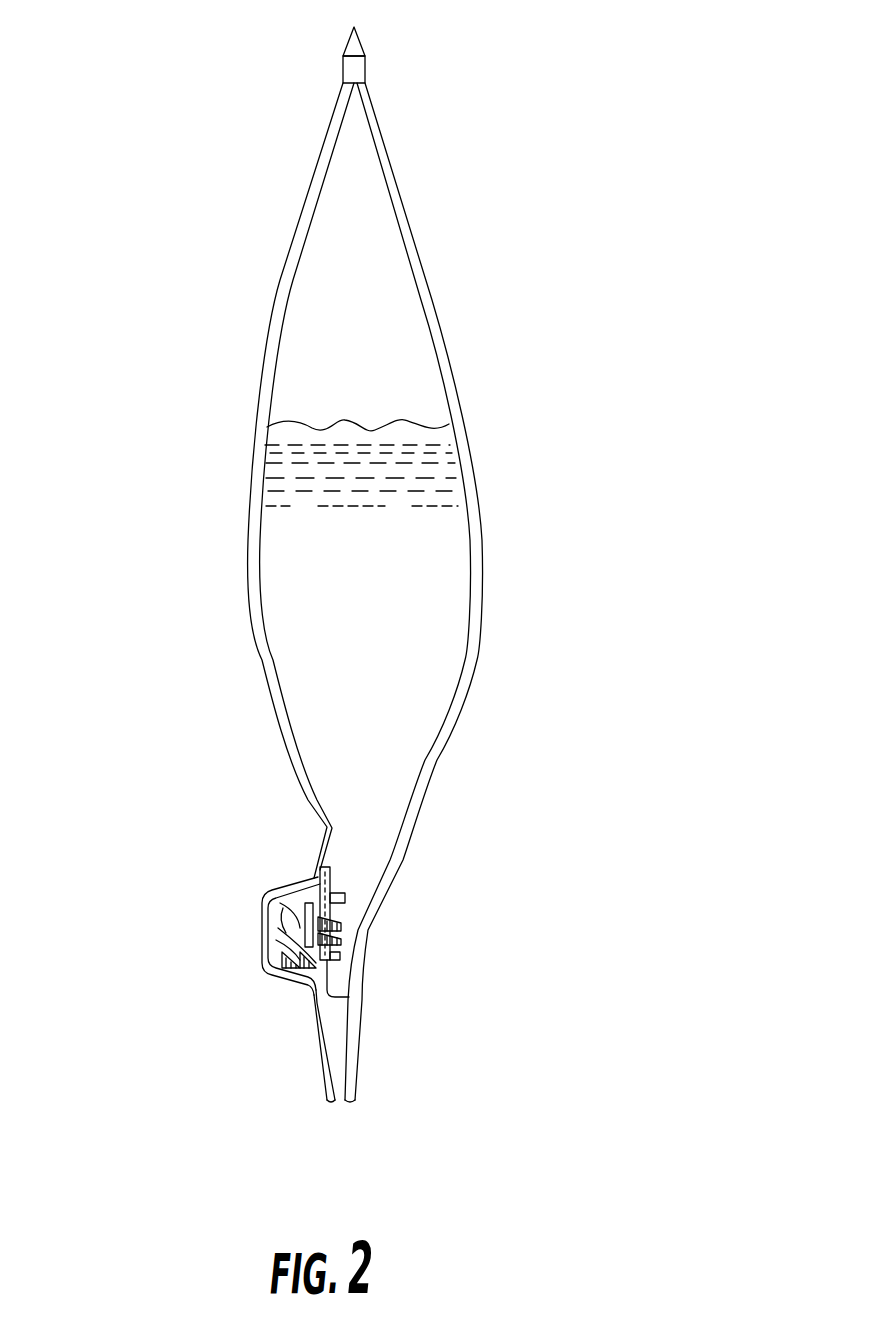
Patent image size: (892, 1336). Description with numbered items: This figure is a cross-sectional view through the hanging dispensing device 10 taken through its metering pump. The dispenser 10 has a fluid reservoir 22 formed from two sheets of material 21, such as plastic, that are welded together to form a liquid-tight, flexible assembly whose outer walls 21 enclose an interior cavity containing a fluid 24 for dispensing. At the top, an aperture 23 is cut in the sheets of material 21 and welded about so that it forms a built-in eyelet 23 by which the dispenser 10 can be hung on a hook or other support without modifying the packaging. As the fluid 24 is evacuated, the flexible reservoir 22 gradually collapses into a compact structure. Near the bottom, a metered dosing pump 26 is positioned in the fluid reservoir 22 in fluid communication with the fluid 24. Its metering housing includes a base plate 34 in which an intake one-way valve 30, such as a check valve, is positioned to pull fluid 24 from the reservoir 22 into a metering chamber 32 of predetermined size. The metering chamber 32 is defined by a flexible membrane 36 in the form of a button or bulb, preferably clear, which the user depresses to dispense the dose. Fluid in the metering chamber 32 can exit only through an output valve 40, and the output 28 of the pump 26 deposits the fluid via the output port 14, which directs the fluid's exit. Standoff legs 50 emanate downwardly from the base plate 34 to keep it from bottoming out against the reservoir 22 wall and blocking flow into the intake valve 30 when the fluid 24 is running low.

The dispensing device 10 is at (588, 488).
The output port 14 is at (343, 1090).
The sheets of material 21 is at (403, 243).
The fluid reservoir 22 is at (425, 473).
The aperture 23 is at (353, 68).
The fluid 24 is at (344, 587).
The metered dosing pump 26 is at (262, 876).
The output 28 is at (307, 997).
The intake one-way valve 30 is at (272, 908).
The metering chamber 32 is at (300, 918).
The base plate 34 is at (316, 878).
The flexible membrane 36 is at (267, 950).
The output valve 40 is at (302, 988).
The standoff legs 50 is at (343, 893).